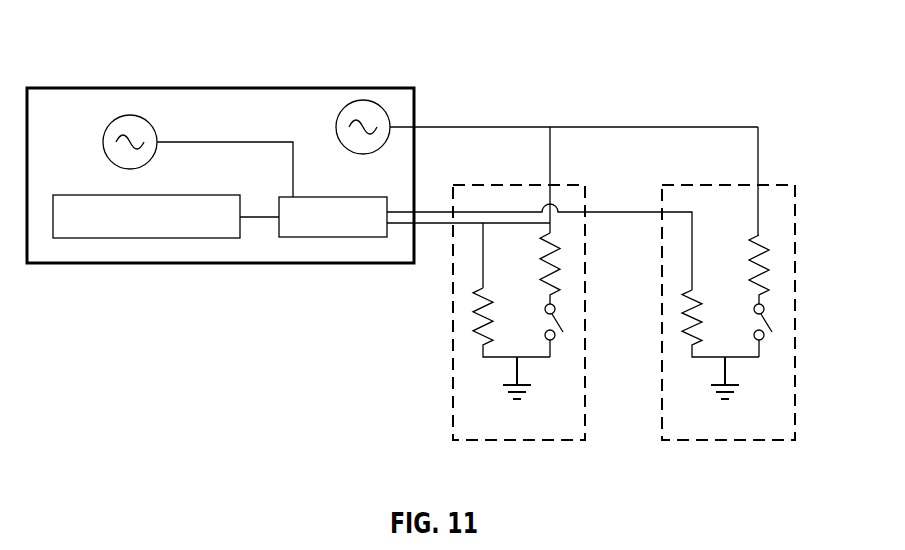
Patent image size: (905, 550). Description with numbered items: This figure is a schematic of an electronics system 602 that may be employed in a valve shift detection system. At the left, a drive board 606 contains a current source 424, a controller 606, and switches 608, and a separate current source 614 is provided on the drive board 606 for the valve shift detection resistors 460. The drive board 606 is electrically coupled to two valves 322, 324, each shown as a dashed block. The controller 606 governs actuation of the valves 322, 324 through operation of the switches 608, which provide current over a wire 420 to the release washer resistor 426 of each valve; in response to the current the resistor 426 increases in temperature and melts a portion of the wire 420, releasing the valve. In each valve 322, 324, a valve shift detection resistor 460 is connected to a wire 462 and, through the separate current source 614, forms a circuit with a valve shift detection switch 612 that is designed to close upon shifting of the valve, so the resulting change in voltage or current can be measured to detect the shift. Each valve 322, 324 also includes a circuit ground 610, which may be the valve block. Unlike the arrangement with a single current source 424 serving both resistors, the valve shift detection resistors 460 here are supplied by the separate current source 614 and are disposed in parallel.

The electronics system 602 is at (726, 37).
The drive board / controller 606 is at (84, 88).
The current source 424 is at (103, 142).
The separate current source 614 is at (340, 122).
The switches 608 is at (335, 197).
The wire 420 is at (484, 240).
The wire 462 is at (541, 226).
The valve shift detection resistor 460 is at (561, 251).
The valve shift detection switch 612 is at (546, 320).
The release washer resistor 426 is at (470, 308).
The valve 322 is at (452, 390).
The valve 324 is at (795, 280).
The circuit ground 610 is at (566, 394).